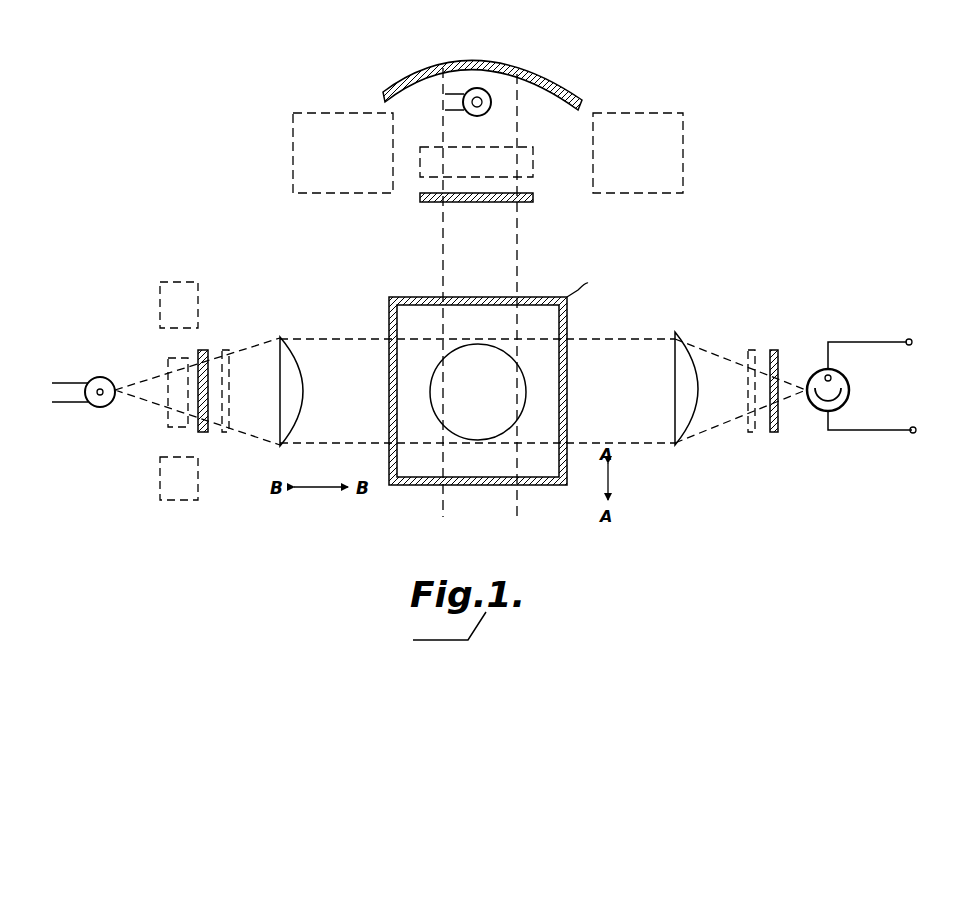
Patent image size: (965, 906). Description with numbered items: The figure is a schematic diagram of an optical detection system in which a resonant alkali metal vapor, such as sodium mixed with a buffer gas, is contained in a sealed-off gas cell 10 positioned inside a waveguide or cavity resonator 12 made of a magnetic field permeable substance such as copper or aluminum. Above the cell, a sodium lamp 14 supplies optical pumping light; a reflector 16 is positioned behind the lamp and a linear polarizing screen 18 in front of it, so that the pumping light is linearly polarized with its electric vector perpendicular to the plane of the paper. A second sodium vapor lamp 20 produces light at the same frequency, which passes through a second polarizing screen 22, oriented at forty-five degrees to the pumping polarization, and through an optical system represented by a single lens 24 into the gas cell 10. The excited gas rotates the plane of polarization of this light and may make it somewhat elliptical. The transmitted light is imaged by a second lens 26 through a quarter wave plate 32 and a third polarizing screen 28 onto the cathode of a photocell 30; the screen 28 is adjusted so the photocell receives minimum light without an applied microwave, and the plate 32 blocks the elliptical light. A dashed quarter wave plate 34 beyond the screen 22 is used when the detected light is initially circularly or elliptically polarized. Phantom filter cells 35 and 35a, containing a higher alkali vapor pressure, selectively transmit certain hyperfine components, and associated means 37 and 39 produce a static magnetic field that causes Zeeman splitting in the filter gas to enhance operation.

The gas cell 10 is at (493, 392).
The waveguide or cavity resonator 12 is at (575, 376).
The sodium lamp 14 is at (476, 114).
The reflector 16 is at (486, 82).
The linear polarizing screen 18 is at (499, 199).
The sodium vapor lamp 20 is at (85, 378).
The second polarizing screen 22 is at (223, 406).
The lens 24 is at (300, 380).
The lens 26 is at (699, 399).
The third polarizing screen 28 is at (793, 382).
The photocell 30 is at (881, 386).
The quarter wave plate 32 is at (754, 371).
The quarter wave plate 34 is at (243, 375).
The second gas cell 35 is at (498, 158).
The second filter 35a is at (157, 399).
The means for producing a static magnetic field 37 is at (196, 383).
The means for producing a static magnetic field 39 is at (488, 127).